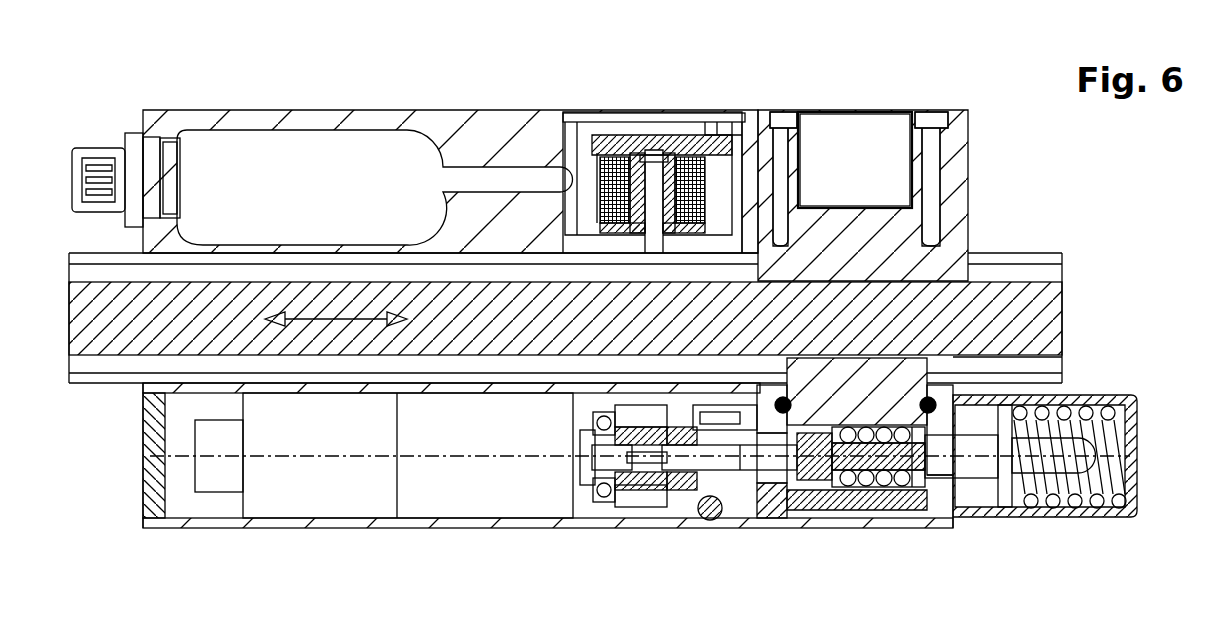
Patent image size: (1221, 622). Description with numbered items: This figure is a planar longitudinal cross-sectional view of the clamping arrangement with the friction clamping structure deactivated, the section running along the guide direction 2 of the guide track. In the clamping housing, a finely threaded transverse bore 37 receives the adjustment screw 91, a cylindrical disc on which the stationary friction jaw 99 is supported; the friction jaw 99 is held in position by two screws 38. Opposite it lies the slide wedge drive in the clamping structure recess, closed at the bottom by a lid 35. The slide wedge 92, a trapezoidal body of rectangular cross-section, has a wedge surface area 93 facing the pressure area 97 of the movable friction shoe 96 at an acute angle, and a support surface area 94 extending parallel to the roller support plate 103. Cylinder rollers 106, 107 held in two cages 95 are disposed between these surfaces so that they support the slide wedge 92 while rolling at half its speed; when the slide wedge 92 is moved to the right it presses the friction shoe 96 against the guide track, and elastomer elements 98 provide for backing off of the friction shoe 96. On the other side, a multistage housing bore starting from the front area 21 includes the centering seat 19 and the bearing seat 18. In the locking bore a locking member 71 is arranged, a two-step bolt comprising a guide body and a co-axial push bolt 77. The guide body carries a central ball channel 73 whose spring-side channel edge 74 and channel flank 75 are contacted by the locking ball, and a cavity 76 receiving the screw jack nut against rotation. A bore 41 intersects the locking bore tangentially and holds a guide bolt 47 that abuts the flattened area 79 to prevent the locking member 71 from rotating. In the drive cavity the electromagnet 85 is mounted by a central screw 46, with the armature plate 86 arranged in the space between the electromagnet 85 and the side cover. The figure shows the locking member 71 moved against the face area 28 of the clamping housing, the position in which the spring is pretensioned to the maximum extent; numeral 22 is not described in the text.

The guide direction 2 is at (320, 319).
The bearing seat 18 is at (605, 495).
The centering seat 19 is at (588, 474).
The front area 21 is at (142, 127).
The upper housing 22 is at (968, 171).
The face area 28 is at (778, 478).
The lid 35 is at (1005, 507).
The transverse bore 37 is at (802, 153).
The screws 38 is at (932, 120).
The bore 41 is at (708, 512).
The central screw 46 is at (653, 180).
The guide bolt 47 is at (752, 497).
The locking member 71 is at (680, 494).
The ball channel 73 is at (716, 412).
The spring-side channel edge 74 is at (778, 182).
The channel flank 75 is at (706, 413).
The cavity 76 is at (705, 495).
The push bolt 77 is at (790, 470).
The flattened area 79 is at (700, 487).
The electromagnet 85 is at (600, 140).
The armature plate 86 is at (677, 143).
The adjustment screw 91 is at (872, 128).
The slide wedge 92 is at (868, 480).
The wedge surface area 93 is at (855, 463).
The support surface area 94 is at (965, 512).
The cages 95 is at (913, 435).
The friction shoe 96 is at (960, 357).
The pressure area 97 is at (912, 322).
The elastomer elements 98 is at (936, 402).
The friction jaw 99 is at (957, 238).
The roller support plate 103 is at (955, 490).
The cylinder rollers 106 is at (905, 483).
The cylinder rollers 107 is at (893, 372).